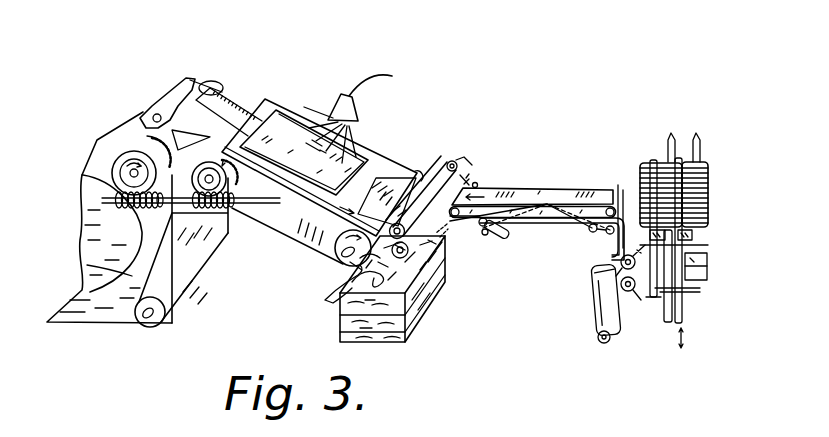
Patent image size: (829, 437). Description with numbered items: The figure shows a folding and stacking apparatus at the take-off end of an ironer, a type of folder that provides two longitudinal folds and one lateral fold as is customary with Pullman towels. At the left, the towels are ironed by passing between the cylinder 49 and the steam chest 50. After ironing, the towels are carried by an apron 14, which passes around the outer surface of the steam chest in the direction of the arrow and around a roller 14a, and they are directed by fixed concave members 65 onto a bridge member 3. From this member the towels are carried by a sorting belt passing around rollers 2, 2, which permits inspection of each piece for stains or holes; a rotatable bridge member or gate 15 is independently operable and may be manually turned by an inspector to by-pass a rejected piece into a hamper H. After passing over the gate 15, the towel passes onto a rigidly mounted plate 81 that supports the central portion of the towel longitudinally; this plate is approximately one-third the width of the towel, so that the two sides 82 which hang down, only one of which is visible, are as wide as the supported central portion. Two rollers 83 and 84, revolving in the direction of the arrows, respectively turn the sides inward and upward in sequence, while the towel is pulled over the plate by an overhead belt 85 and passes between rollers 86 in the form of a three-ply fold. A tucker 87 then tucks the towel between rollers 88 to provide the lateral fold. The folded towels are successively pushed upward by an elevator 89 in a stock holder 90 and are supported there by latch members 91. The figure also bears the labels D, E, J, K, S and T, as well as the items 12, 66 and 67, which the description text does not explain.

The delivery station housing D is at (137, 195).
The rollers 2 is at (345, 265).
The bridge member 3 is at (259, 101).
The roller 12 is at (224, 178).
The apron 14 is at (229, 232).
The roller 14a is at (147, 137).
The rotatable bridge member or gate 15 is at (430, 176).
The cylinder 49 is at (86, 207).
The steam chest 50 is at (88, 277).
The fixed concave members 65 is at (197, 80).
The gear 66 is at (406, 253).
The arm 67 is at (452, 161).
The rigidly mounted plate 81 is at (445, 222).
The sides of the towel 82 is at (470, 228).
The roller 83 is at (500, 238).
The roller 84 is at (583, 225).
The overhead belt 85 is at (520, 188).
The rollers 86 is at (614, 189).
The tucker 87 is at (596, 297).
The rollers 88 is at (635, 247).
The elevator 89 is at (693, 284).
The stock holder 90 is at (702, 245).
The latch members 91 is at (698, 237).
The station E is at (387, 176).
The hamper H is at (340, 334).
The bracket J is at (615, 200).
The stack K is at (687, 175).
The spring stack S is at (708, 178).
The block T is at (594, 258).